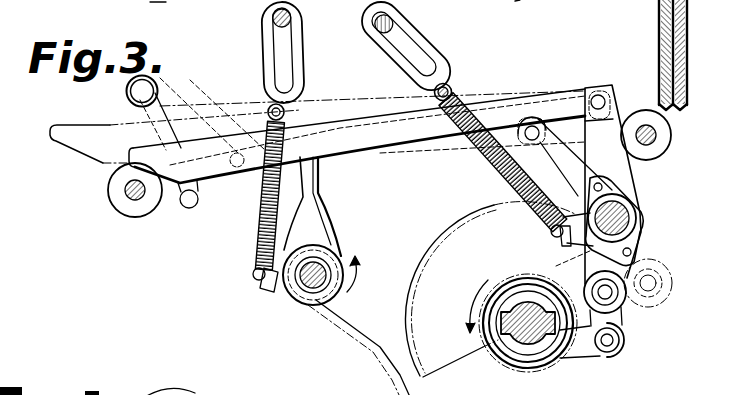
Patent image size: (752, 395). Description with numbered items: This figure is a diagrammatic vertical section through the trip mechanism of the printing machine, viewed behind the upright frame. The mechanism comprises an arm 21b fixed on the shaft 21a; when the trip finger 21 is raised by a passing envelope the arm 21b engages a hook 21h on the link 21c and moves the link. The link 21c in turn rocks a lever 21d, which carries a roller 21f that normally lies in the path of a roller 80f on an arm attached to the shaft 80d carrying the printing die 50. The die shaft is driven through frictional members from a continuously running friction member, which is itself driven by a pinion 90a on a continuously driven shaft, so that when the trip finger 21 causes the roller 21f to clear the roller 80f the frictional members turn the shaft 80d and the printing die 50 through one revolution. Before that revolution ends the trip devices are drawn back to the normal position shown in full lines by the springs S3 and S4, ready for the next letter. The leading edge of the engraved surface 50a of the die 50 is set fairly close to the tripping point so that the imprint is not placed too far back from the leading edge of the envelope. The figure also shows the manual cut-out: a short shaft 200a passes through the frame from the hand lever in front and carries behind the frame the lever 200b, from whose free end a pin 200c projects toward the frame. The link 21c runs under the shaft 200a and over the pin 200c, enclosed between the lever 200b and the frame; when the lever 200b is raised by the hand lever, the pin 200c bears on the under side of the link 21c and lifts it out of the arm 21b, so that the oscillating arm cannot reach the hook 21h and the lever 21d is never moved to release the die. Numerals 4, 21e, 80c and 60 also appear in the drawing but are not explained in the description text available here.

The frame 4 is at (149, 6).
The pinion 90a is at (520, 0).
The short shaft 200a is at (158, 93).
The lever 200b is at (135, 112).
The pin 200c is at (189, 208).
The link 21c is at (381, 131).
The hook 21h is at (308, 135).
The spring S4 is at (263, 212).
The spring S3 is at (503, 172).
The arm 21b is at (303, 203).
The shaft 21a is at (310, 291).
The trip finger 21 is at (387, 363).
The lever 21d is at (622, 172).
The boss 21e is at (617, 220).
The roller 21f is at (626, 308).
The pivot ring 80c is at (597, 341).
The roller 80f is at (621, 355).
The shaft 80d is at (540, 333).
The printing die 50 is at (446, 367).
The engraved surface 50a is at (418, 268).
The drum 60 is at (192, 394).